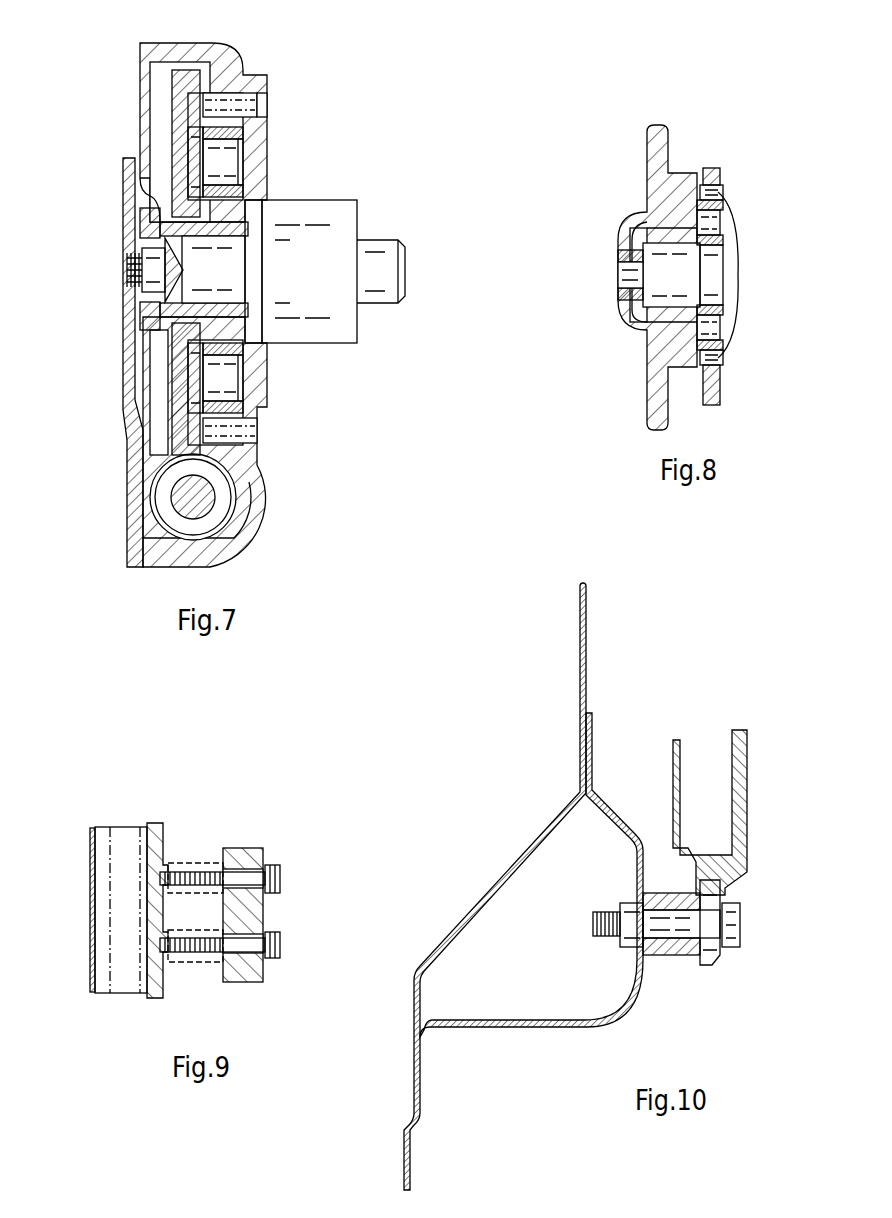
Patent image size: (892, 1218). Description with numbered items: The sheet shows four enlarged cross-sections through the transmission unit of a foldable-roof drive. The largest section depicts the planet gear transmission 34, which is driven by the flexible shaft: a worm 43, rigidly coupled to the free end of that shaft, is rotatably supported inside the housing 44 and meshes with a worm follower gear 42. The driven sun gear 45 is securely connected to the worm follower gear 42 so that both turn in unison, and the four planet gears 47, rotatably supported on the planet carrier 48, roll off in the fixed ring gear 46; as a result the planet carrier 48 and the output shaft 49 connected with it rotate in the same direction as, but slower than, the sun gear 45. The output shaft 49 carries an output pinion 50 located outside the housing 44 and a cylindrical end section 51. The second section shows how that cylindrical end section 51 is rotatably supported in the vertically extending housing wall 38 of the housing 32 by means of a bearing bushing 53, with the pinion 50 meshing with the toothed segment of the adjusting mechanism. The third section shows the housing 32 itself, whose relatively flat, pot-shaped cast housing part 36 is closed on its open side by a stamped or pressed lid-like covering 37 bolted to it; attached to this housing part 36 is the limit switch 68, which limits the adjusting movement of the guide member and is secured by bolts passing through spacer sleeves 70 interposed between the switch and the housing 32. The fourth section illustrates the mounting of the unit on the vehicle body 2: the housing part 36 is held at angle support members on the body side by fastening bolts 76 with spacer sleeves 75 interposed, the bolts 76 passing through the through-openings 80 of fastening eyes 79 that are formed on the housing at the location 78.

In FIG. 7, the planet gear transmission 34 is at (212, 38).
In FIG. 7, the planet gears 47 is at (222, 100).
In FIG. 8, the planet gears 47 is at (720, 195).
In FIG. 7, the fixed ring gear 46 is at (260, 98).
In FIG. 7, the planet carrier 48 is at (240, 150).
In FIG. 8, the planet carrier 48 is at (715, 330).
In FIG. 7, the output shaft 49 is at (235, 248).
In FIG. 8, the output shaft 49 is at (683, 275).
In FIG. 7, the cylindrical end section 51 is at (385, 255).
In FIG. 8, the cylindrical end section 51 is at (618, 278).
In FIG. 7, the driven sun gear 45 is at (263, 355).
In FIG. 7, the output pinion 50 is at (338, 336).
In FIG. 8, the output pinion 50 is at (655, 238).
In FIG. 7, the worm follower gear 42 is at (170, 440).
In FIG. 7, the worm 43 is at (210, 522).
In FIG. 7, the housing 44 is at (160, 567).
In FIG. 8, the housing 44 is at (710, 170).
In FIG. 8, the housing 32 is at (644, 150).
In FIG. 9, the housing 32 is at (140, 1002).
In FIG. 8, the bearing bushing 53 is at (618, 256).
In FIG. 8, the housing wall 38 is at (626, 322).
In FIG. 9, the housing part 36 is at (156, 823).
In FIG. 9, the lid-like covering 37 is at (92, 900).
In FIG. 9, the limit switch 68 is at (255, 912).
In FIG. 9, the spacer sleeves 70 is at (196, 962).
In FIG. 10, the body 2 is at (522, 845).
In FIG. 10, the through-openings 80 is at (722, 887).
In FIG. 10, the fastening bolts 76 is at (742, 923).
In FIG. 10, the spacer sleeves 75 is at (670, 958).
In FIG. 10, the fastening eyes 79 is at (712, 978).
In FIG. 10, the fastening location 78 is at (580, 1030).